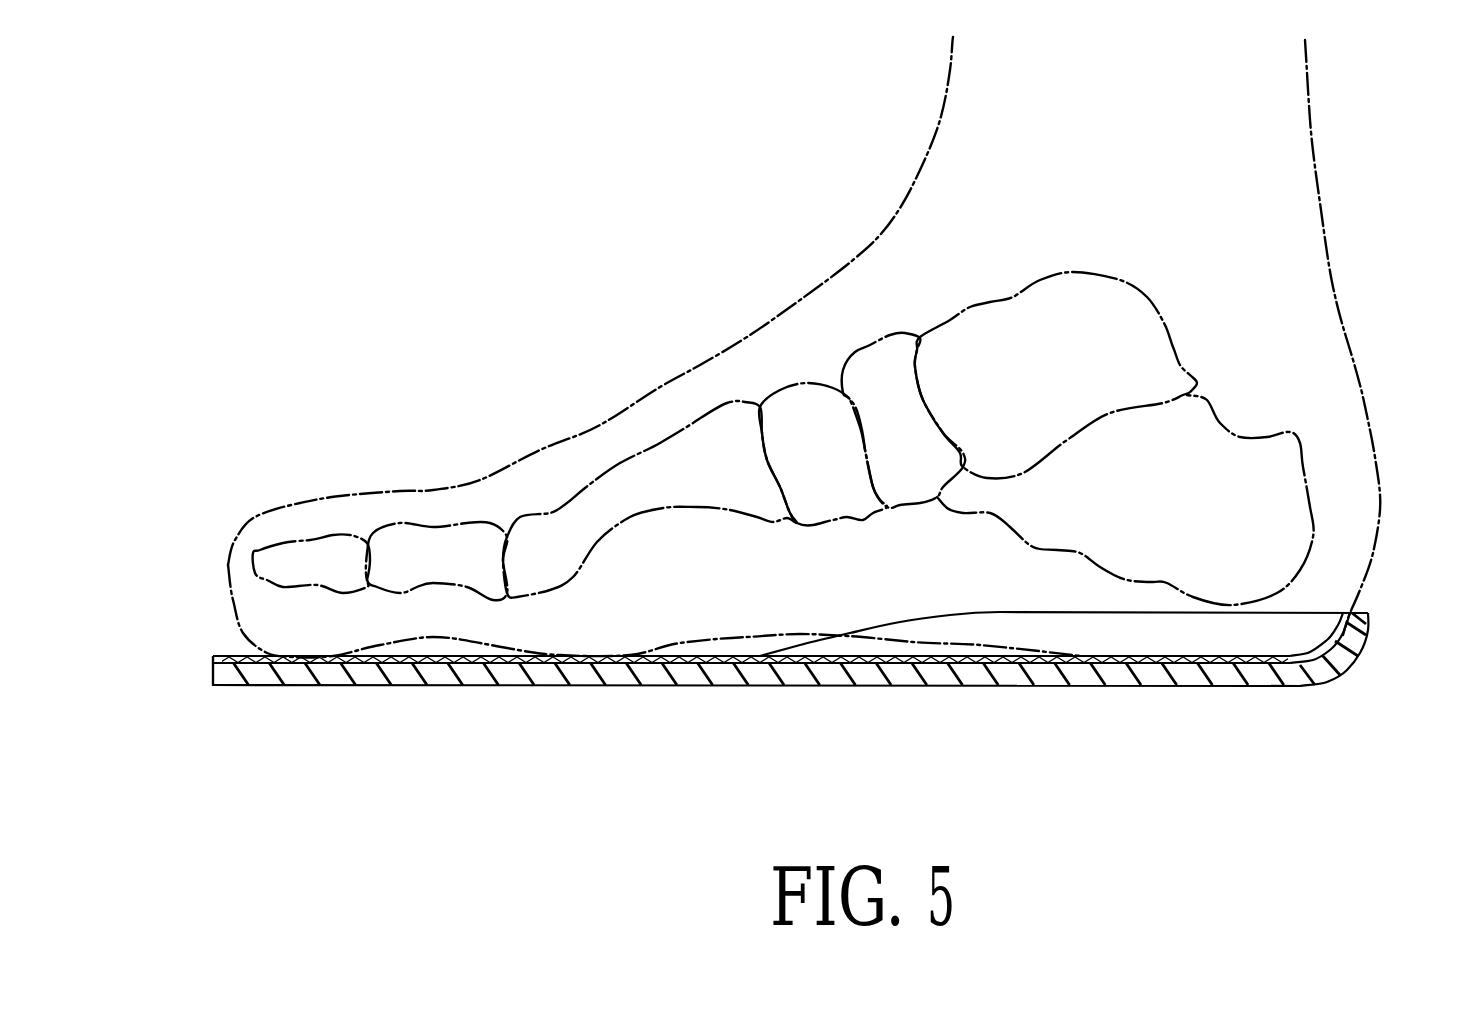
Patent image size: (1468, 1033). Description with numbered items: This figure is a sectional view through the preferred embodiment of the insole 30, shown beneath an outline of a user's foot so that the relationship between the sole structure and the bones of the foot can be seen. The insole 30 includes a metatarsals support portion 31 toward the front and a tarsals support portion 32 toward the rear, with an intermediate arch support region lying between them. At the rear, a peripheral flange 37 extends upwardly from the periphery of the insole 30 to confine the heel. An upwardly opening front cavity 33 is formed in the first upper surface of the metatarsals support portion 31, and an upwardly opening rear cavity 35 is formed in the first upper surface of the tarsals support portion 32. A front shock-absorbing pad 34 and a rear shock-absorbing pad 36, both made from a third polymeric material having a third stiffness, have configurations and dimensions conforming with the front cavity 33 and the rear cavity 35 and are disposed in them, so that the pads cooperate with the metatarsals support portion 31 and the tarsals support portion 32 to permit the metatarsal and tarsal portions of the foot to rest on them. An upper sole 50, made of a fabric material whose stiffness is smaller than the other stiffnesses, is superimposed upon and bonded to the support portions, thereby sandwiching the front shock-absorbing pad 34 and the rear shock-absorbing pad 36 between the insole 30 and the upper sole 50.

The insole 30 is at (813, 677).
The metatarsals support portion 31 is at (237, 685).
The tarsals support portion 32 is at (1350, 663).
The front cavity 33 is at (756, 756).
The front shock-absorbing pad 34 is at (375, 685).
The rear cavity 35 is at (755, 730).
The rear shock-absorbing pad 36 is at (1172, 680).
The peripheral flange 37 is at (1303, 620).
The upper sole 50 is at (212, 632).